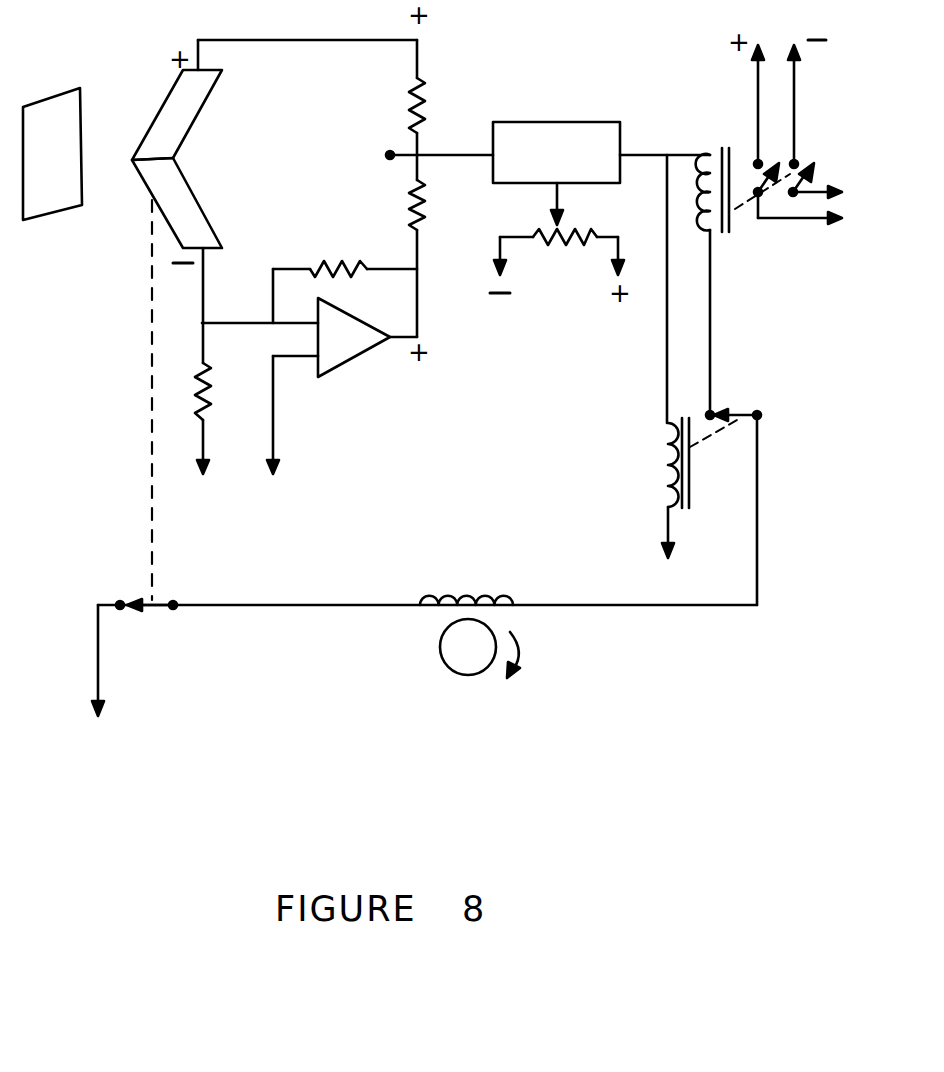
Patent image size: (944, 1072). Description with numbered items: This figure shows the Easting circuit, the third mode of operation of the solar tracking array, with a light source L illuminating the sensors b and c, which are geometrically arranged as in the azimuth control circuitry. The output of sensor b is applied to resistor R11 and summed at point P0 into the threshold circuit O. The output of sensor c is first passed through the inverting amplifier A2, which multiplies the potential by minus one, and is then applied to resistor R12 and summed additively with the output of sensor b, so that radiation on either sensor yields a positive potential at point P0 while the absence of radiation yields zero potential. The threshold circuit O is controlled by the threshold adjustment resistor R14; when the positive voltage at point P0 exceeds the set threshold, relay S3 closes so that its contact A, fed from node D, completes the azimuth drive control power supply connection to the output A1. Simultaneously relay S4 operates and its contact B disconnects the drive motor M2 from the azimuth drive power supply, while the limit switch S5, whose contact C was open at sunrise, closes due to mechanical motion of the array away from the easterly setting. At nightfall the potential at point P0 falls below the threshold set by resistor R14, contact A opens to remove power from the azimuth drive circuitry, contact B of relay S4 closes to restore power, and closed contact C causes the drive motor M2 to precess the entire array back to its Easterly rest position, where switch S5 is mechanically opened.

The light source / lamp L is at (52, 168).
The sensor b is at (177, 115).
The sensor c is at (177, 203).
The resistor R11 is at (310, 276).
The resistor R12 is at (367, 228).
The summing point P0 is at (423, 160).
The inverting amplifier A2 is at (540, 327).
The threshold circuit O is at (556, 134).
The threshold adjustment resistor R14 is at (559, 254).
The node D is at (665, 271).
The contact A is at (712, 267).
The relay S3 is at (742, 138).
The output A1 is at (818, 212).
The contact B is at (698, 407).
The relay S4 is at (678, 488).
The contact C is at (172, 404).
The limit switch S5 is at (144, 629).
The motor M2 is at (459, 637).